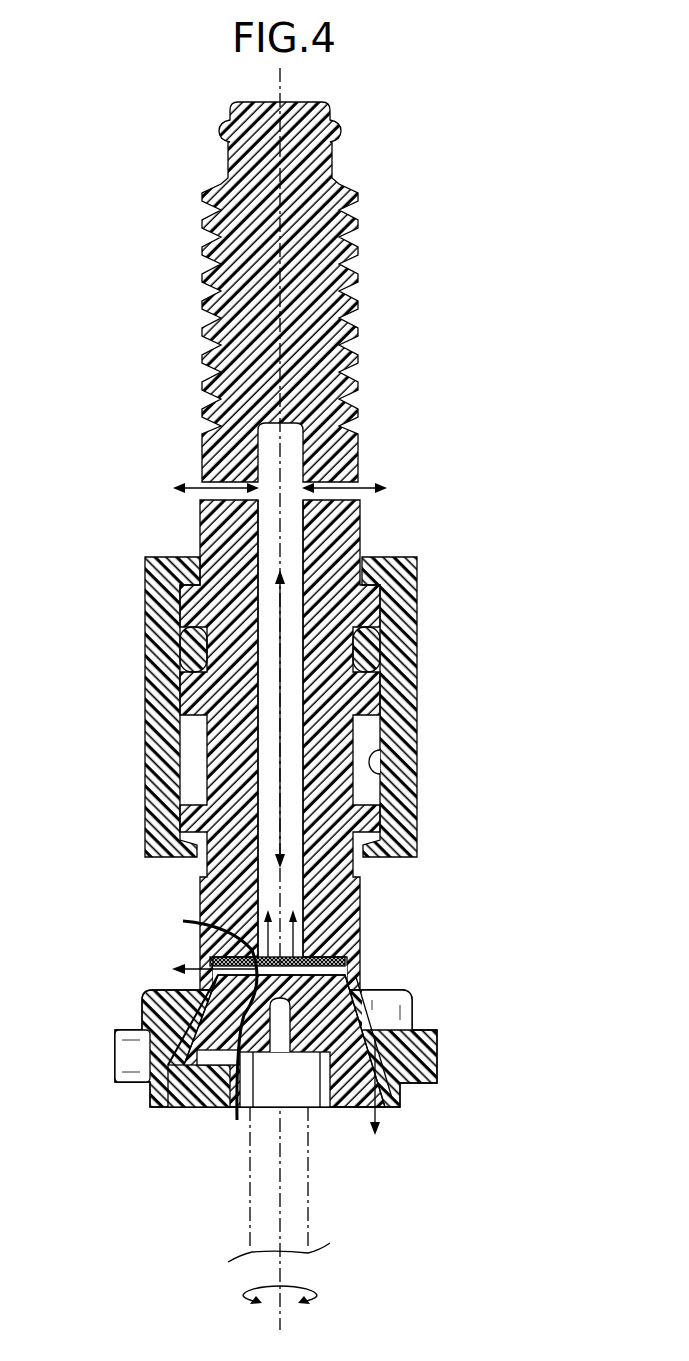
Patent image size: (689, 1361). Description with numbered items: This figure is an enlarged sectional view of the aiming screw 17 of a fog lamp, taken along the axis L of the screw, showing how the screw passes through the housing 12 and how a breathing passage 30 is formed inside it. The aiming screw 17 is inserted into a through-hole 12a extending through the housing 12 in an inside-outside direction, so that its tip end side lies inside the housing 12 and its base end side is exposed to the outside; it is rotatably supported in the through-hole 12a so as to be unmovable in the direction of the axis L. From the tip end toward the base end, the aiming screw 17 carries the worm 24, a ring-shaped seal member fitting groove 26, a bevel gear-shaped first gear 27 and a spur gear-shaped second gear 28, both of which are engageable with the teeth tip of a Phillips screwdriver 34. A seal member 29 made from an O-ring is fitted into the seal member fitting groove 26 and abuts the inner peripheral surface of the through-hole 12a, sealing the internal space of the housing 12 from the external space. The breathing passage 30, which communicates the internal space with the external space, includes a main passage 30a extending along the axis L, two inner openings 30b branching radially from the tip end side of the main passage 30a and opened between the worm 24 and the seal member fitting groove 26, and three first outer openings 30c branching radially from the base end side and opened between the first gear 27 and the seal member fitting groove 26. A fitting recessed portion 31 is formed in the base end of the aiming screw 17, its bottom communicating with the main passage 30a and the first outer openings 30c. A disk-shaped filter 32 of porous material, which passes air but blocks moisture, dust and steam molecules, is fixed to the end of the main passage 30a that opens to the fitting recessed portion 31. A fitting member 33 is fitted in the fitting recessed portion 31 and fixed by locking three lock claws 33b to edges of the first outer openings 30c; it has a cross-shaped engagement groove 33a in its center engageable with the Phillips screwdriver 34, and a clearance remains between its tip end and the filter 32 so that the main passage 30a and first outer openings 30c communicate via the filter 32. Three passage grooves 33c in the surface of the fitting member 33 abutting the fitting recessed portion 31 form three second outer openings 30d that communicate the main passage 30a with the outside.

The housing 12 is at (425, 722).
The through-hole 12a is at (383, 772).
The aiming screw 17 is at (426, 481).
The worm 24 is at (354, 296).
The seal member fitting groove 26 is at (196, 652).
The first gear 27 is at (390, 992).
The second gear 28 is at (122, 1060).
The seal member 29 is at (374, 641).
The breathing passage 30 is at (263, 771).
The main passage 30a is at (300, 806).
The inner openings 30b is at (208, 498).
The first outer openings 30c is at (200, 962).
The second outer openings 30d is at (393, 1038).
The fitting recessed portion 31 is at (212, 1045).
The filter 32 is at (293, 955).
The fitting member 33 is at (193, 1114).
The engagement groove 33a is at (297, 1052).
The lock claws 33b is at (197, 978).
The passage grooves 33c is at (362, 1013).
The Phillips screwdriver 34 is at (250, 1205).
The axis L is at (255, 447).